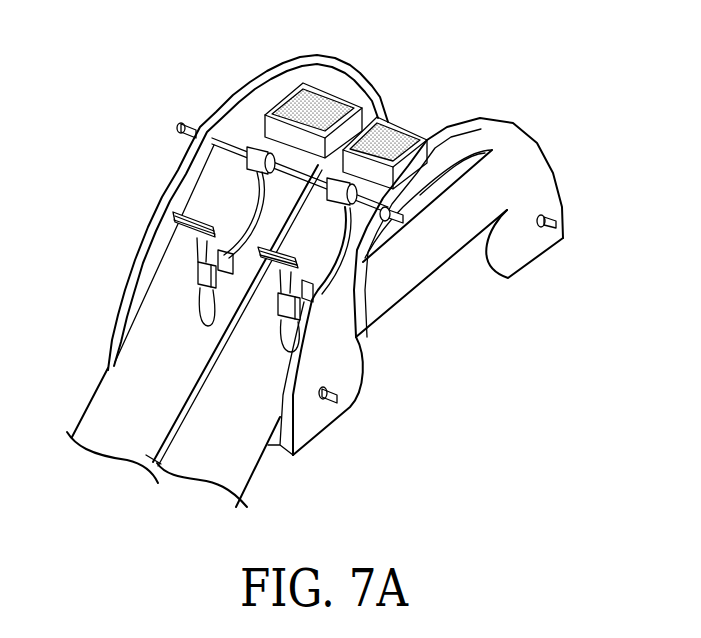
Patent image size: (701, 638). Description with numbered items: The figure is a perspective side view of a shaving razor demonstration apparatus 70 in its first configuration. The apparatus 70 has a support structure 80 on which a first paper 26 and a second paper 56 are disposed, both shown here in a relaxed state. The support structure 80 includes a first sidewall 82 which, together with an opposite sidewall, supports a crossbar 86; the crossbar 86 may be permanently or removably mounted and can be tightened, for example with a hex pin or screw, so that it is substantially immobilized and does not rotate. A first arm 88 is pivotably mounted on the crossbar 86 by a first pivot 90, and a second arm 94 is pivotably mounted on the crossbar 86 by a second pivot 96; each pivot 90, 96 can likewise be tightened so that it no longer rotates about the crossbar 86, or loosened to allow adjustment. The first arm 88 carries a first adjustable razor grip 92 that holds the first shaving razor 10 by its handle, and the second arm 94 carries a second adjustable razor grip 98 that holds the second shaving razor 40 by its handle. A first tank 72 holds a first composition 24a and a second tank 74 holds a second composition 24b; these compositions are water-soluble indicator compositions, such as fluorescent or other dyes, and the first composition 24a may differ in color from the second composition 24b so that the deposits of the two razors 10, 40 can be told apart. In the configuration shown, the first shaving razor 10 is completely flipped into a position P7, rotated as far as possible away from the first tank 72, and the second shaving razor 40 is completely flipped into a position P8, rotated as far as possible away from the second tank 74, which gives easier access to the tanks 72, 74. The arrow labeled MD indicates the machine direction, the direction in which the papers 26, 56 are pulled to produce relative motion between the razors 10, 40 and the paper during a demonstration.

The shaving razor demonstration apparatus 70 is at (108, 44).
The first shaving razor 10 is at (200, 257).
The first paper 26 is at (108, 405).
The second paper 56 is at (238, 467).
The first composition 24a is at (327, 113).
The second composition 24b is at (407, 137).
The first tank 72 is at (330, 117).
The second tank 74 is at (402, 147).
The support structure 80 is at (477, 267).
The first sidewall 82 is at (483, 140).
The crossbar 86 is at (235, 118).
The first arm 88 is at (190, 183).
The first pivot 90 is at (260, 150).
The first adjustable razor grip 92 is at (248, 185).
The second arm 94 is at (413, 250).
The second pivot 96 is at (397, 175).
The second adjustable razor grip 98 is at (360, 350).
The second shaving razor 40 is at (362, 305).
The position P7 is at (175, 295).
The position P8 is at (263, 353).
The machine direction MD is at (595, 397).